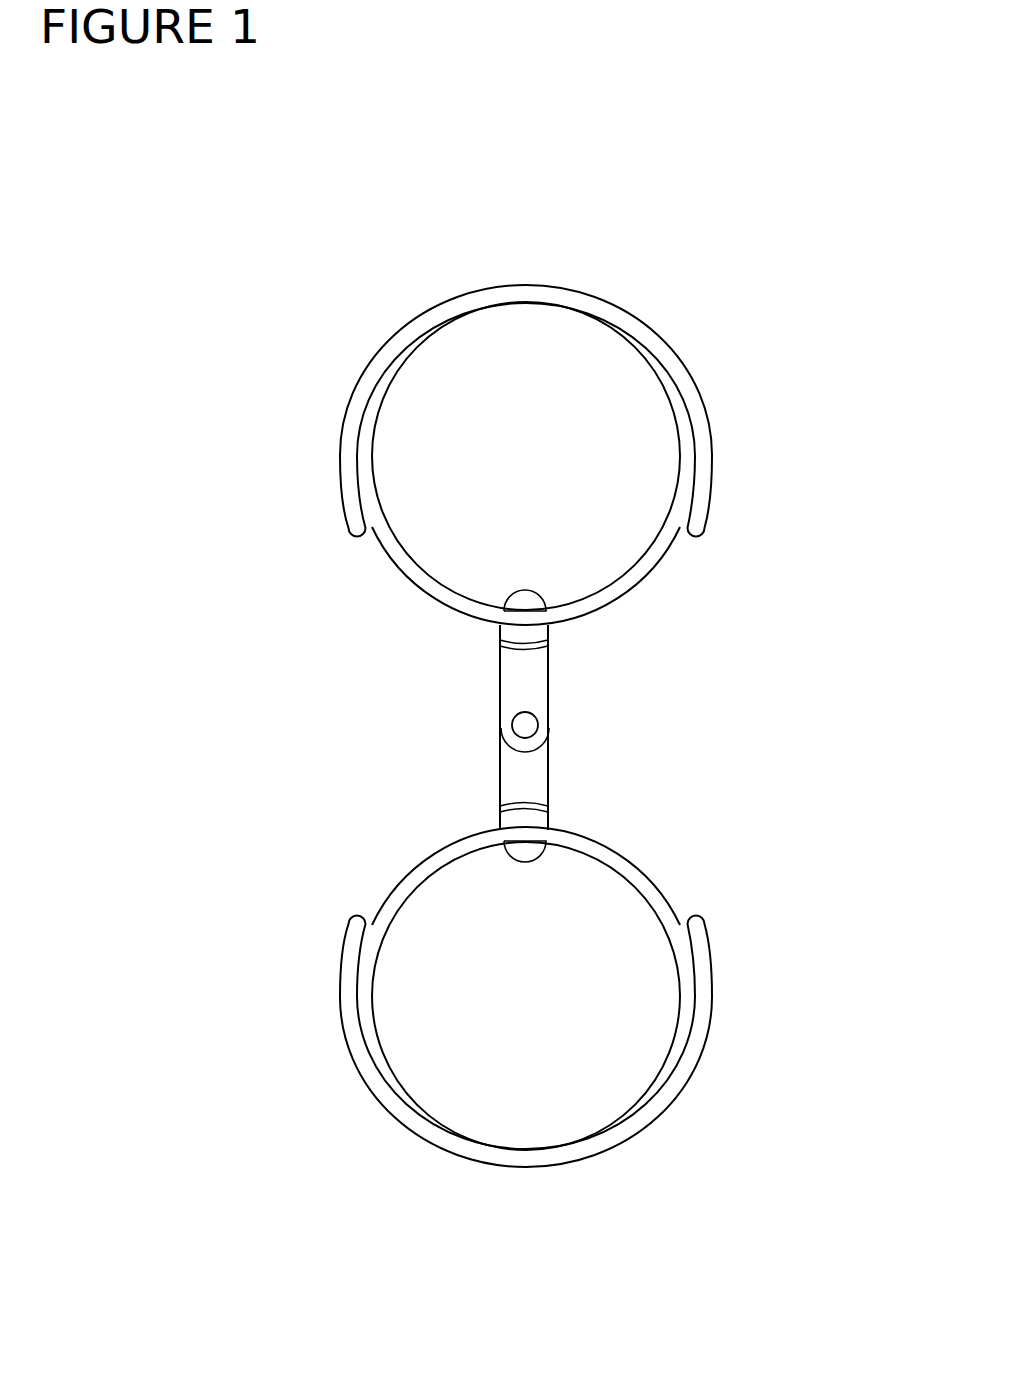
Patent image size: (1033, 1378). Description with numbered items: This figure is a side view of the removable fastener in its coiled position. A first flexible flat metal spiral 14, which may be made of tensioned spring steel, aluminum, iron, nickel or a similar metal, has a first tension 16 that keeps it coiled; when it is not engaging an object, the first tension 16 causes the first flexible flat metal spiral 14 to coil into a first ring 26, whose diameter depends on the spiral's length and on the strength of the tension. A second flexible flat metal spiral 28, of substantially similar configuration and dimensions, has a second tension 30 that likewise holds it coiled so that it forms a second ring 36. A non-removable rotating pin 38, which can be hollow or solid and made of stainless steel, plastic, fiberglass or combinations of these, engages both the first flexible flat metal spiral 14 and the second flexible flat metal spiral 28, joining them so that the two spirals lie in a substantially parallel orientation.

The first flexible flat metal spiral 14 is at (357, 534).
The first tension 16 is at (712, 443).
The first ring 26 is at (533, 496).
The second flexible flat metal spiral 28 is at (697, 918).
The second tension 30 is at (340, 1009).
The second ring 36 is at (521, 966).
The non-removable rotating pin 38 is at (550, 725).